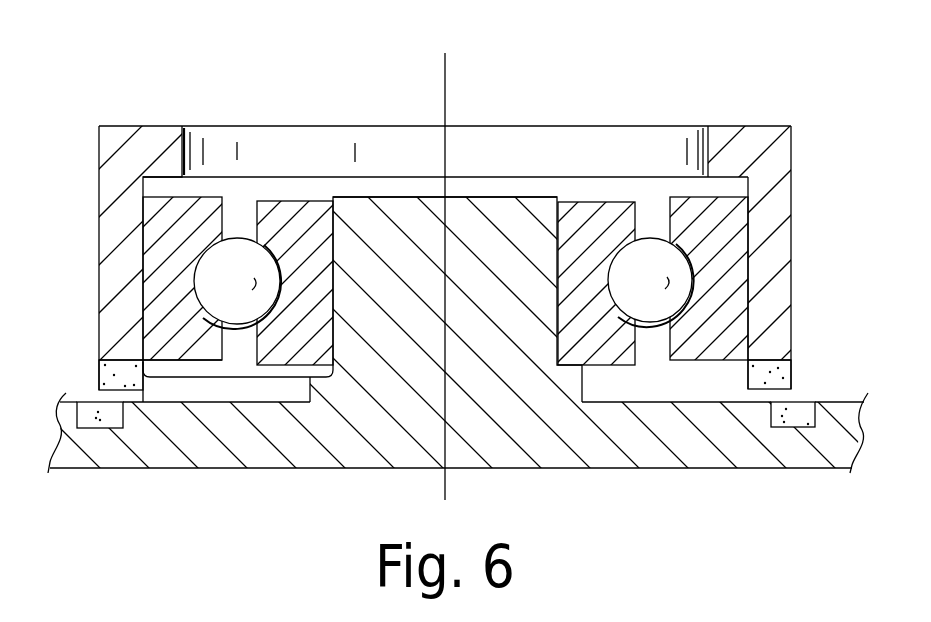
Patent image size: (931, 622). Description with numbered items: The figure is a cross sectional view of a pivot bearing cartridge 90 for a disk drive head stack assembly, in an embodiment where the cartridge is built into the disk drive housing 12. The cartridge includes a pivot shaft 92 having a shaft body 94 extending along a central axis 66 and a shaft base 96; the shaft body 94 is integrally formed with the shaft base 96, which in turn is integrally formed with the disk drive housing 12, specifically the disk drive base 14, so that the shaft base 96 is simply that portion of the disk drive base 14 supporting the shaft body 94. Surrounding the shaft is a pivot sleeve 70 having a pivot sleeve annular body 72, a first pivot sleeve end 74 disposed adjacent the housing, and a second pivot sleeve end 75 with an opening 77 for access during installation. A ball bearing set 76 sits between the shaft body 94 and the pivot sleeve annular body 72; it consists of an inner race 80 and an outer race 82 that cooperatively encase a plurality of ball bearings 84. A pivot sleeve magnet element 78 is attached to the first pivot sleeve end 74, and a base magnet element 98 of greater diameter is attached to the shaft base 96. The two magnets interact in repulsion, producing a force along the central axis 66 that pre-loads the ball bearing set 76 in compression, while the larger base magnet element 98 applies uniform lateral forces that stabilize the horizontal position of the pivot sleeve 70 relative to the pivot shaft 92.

The disk drive housing 12 is at (62, 417).
The disk drive base 14 is at (60, 450).
The central axis 66 is at (456, 59).
The pivot sleeve 70 is at (791, 143).
The pivot sleeve annular body 72 is at (791, 202).
The first pivot sleeve end 74 is at (800, 335).
The second pivot sleeve end 75 is at (150, 130).
The ball bearing set 76 is at (235, 380).
The opening 77 is at (251, 122).
The pivot sleeve magnet element 78 is at (793, 367).
The inner race 80 is at (600, 222).
The outer race 82 is at (705, 222).
The ball bearings 84 is at (658, 302).
The pivot bearing cartridge 90 is at (316, 70).
The pivot shaft 92 is at (417, 315).
The shaft body 94 is at (510, 220).
The shaft base 96 is at (320, 463).
The base magnet element 98 is at (95, 403).